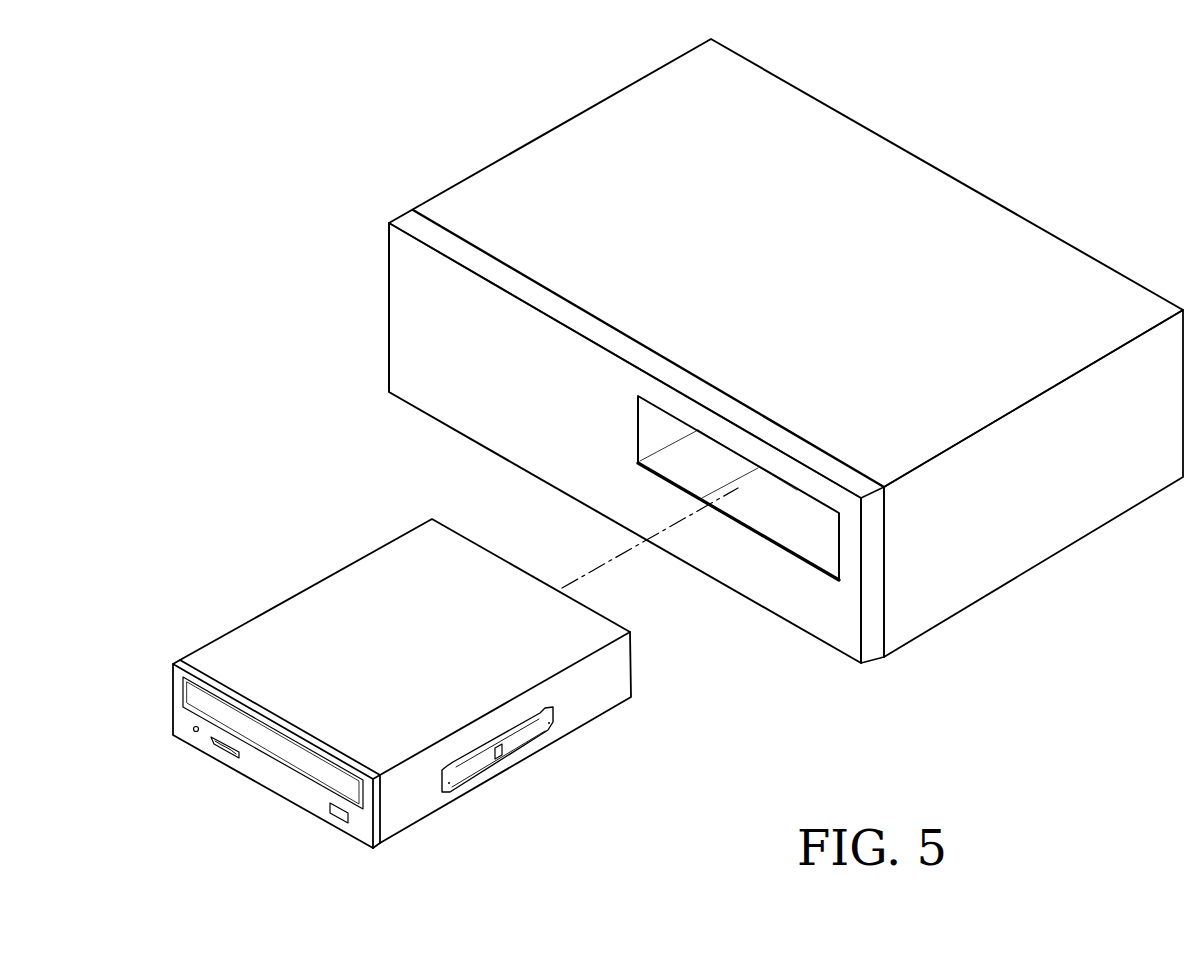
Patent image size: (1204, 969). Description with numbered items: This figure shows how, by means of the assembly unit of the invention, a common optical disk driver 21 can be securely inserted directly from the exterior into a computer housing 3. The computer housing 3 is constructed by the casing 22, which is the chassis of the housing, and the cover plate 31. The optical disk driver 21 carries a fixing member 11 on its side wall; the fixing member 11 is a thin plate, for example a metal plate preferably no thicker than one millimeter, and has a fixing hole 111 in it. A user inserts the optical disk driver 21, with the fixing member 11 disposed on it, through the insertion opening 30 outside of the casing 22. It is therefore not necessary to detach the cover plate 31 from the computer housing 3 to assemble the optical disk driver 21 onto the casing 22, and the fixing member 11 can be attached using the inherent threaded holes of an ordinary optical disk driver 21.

The computer housing 3 is at (1001, 201).
The insertion opening 30 is at (813, 537).
The cover plate 31 is at (1052, 517).
The casing 22 is at (656, 431).
The optical disk driver 21 is at (311, 587).
The fixing member 11 is at (549, 733).
The fixing hole 111 is at (505, 751).